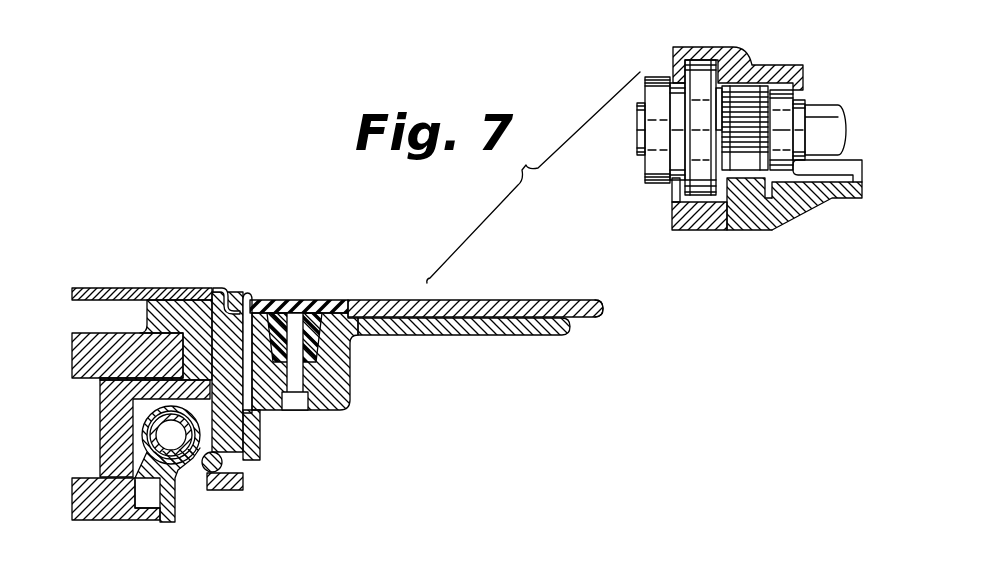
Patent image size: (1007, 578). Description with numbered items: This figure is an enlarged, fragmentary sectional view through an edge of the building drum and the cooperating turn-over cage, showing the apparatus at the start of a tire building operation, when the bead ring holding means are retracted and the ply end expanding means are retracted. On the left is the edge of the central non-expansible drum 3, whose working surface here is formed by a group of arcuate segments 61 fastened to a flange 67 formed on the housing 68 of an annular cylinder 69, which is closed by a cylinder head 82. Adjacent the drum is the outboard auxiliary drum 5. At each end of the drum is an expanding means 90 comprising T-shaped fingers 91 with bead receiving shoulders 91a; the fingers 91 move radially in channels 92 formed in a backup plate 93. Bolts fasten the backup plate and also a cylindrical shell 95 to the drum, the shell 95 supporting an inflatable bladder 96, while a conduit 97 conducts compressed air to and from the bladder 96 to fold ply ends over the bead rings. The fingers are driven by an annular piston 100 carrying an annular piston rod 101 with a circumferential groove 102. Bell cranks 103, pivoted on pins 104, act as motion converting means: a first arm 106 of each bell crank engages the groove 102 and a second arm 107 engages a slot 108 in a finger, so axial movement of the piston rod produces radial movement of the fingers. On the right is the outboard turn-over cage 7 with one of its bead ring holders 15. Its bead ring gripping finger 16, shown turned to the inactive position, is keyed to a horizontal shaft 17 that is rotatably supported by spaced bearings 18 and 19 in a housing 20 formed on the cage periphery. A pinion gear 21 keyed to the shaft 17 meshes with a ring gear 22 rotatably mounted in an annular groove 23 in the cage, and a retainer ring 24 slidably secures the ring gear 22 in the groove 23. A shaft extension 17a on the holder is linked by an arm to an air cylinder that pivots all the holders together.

The central non-expansible drum 3 is at (137, 283).
The outboard auxiliary drum 5 is at (564, 296).
The outboard turn-over cage 7 is at (863, 124).
The bead ring holder 15 is at (661, 66).
The bead ring gripping finger 16 is at (652, 160).
The horizontal shaft 17 is at (640, 127).
The shaft extension 17a is at (823, 122).
The bearing 18 is at (700, 73).
The bearing 19 is at (787, 90).
The housing 20 is at (734, 60).
The pinion gear 21 is at (753, 100).
The ring gear 22 is at (742, 202).
The annular groove 23 is at (745, 200).
The retainer ring 24 is at (686, 225).
The arcuate segments 61 is at (102, 287).
The flange 67 is at (152, 307).
The housing 68 is at (102, 338).
The annular cylinder 69 is at (58, 353).
The cylinder head 82 is at (100, 410).
The expanding means 90 is at (240, 287).
The T-shaped finger 91 is at (254, 306).
The bead receiving shoulder 91a is at (232, 305).
The channel 92 is at (242, 422).
The backup plate 93 is at (252, 438).
The cylindrical support or shell 95 is at (507, 328).
The inflatable bladder 96 is at (596, 320).
The conduit 97 is at (300, 413).
The annular piston 100 is at (76, 526).
The annular piston rod 101 is at (97, 520).
The circumferential groove 102 is at (156, 518).
The bell crank 103 is at (152, 417).
The pin 104 is at (162, 437).
The first arm 106 is at (147, 492).
The second arm 107 is at (200, 478).
The slot 108 is at (244, 474).